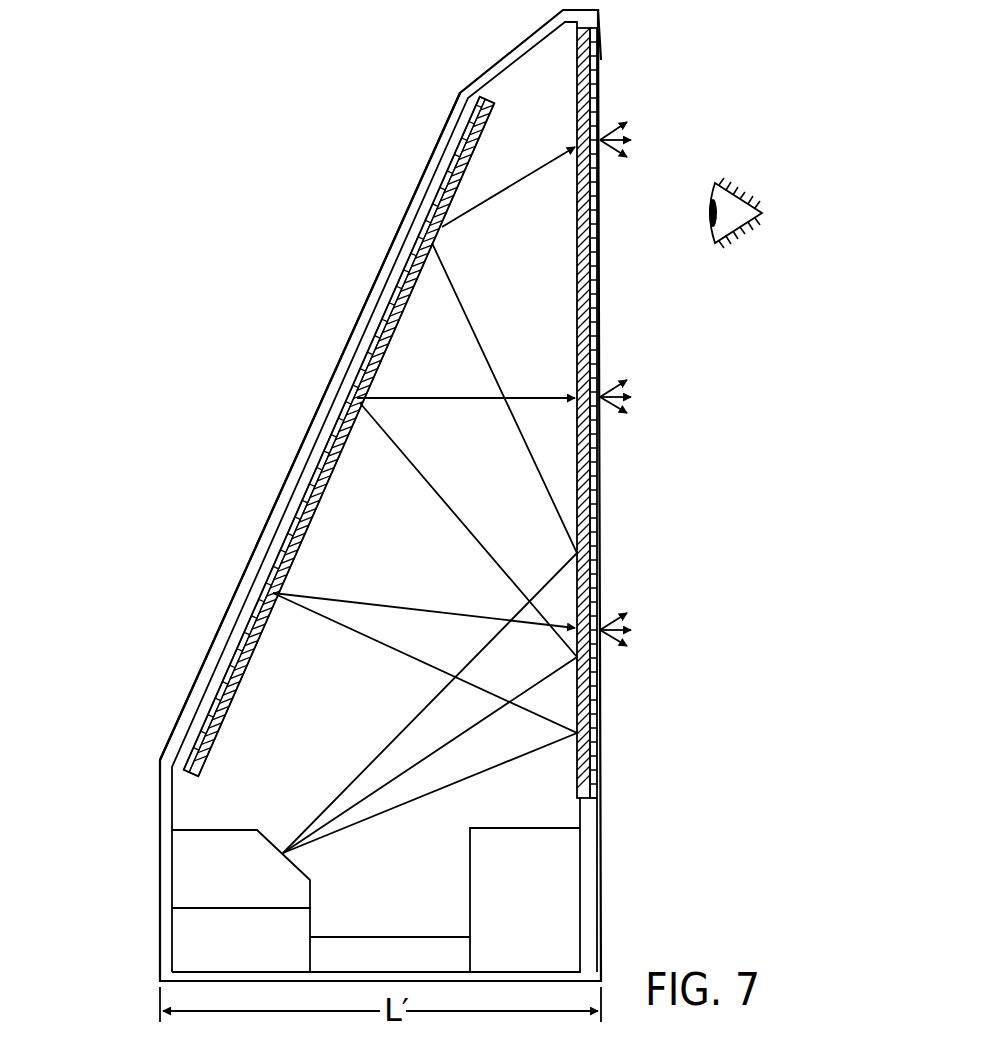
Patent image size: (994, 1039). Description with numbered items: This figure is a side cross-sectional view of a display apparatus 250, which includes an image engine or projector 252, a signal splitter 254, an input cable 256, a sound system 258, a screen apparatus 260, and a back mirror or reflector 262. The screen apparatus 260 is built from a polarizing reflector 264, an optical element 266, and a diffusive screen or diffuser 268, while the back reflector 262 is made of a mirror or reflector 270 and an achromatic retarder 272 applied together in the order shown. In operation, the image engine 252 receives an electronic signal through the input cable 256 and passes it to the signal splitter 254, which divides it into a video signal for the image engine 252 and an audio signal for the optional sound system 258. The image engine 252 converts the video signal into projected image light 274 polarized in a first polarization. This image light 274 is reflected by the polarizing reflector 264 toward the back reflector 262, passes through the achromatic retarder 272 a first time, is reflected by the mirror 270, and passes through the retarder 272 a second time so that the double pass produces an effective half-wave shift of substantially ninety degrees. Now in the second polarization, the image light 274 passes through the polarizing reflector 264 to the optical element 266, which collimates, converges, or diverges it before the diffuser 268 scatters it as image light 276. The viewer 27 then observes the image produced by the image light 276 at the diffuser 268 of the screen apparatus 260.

The viewer 27 is at (712, 170).
The display apparatus 250 is at (315, 218).
The image engine 252 is at (257, 885).
The signal splitter 254 is at (257, 955).
The input cable 256 is at (172, 940).
The sound system 258 is at (551, 916).
The screen apparatus 260 is at (609, 413).
The back reflector 262 is at (357, 436).
The polarizing reflector 264 is at (573, 108).
The optical element 266 is at (600, 22).
The diffuser 268 is at (600, 98).
The mirror 270 is at (258, 643).
The achromatic retarder 272 is at (468, 165).
The image light 274 is at (357, 776).
The image light 276 is at (606, 148).